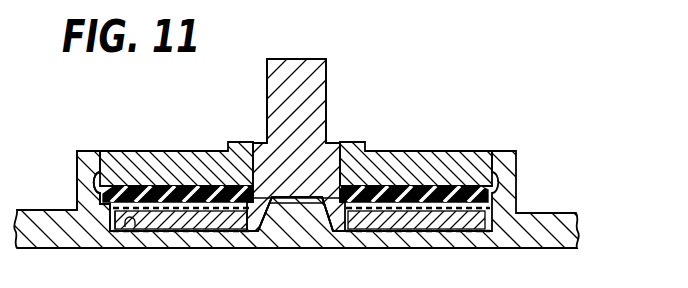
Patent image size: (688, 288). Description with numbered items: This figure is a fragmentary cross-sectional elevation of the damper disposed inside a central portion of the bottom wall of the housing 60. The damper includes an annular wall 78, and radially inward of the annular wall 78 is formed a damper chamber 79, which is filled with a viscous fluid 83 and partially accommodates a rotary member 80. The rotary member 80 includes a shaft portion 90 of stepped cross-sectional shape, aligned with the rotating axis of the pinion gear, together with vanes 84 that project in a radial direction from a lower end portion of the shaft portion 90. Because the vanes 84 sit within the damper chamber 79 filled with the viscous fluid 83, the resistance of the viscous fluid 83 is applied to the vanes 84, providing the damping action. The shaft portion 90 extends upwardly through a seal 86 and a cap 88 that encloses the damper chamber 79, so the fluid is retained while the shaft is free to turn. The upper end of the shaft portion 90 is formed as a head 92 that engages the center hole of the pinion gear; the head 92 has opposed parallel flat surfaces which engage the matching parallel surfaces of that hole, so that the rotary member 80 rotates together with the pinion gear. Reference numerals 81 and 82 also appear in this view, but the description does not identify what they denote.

The housing 60 is at (46, 236).
The annular wall 78 is at (88, 158).
The damper chamber 79 is at (124, 222).
The rotary member 80 is at (350, 97).
The contact layer 81 is at (293, 203).
The pedestal 82 is at (322, 236).
The viscous fluid 83 is at (182, 232).
The vanes 84 is at (442, 232).
The seal 86 is at (460, 197).
The cap 88 is at (441, 160).
The shaft portion 90 is at (330, 143).
The head 92 is at (277, 77).